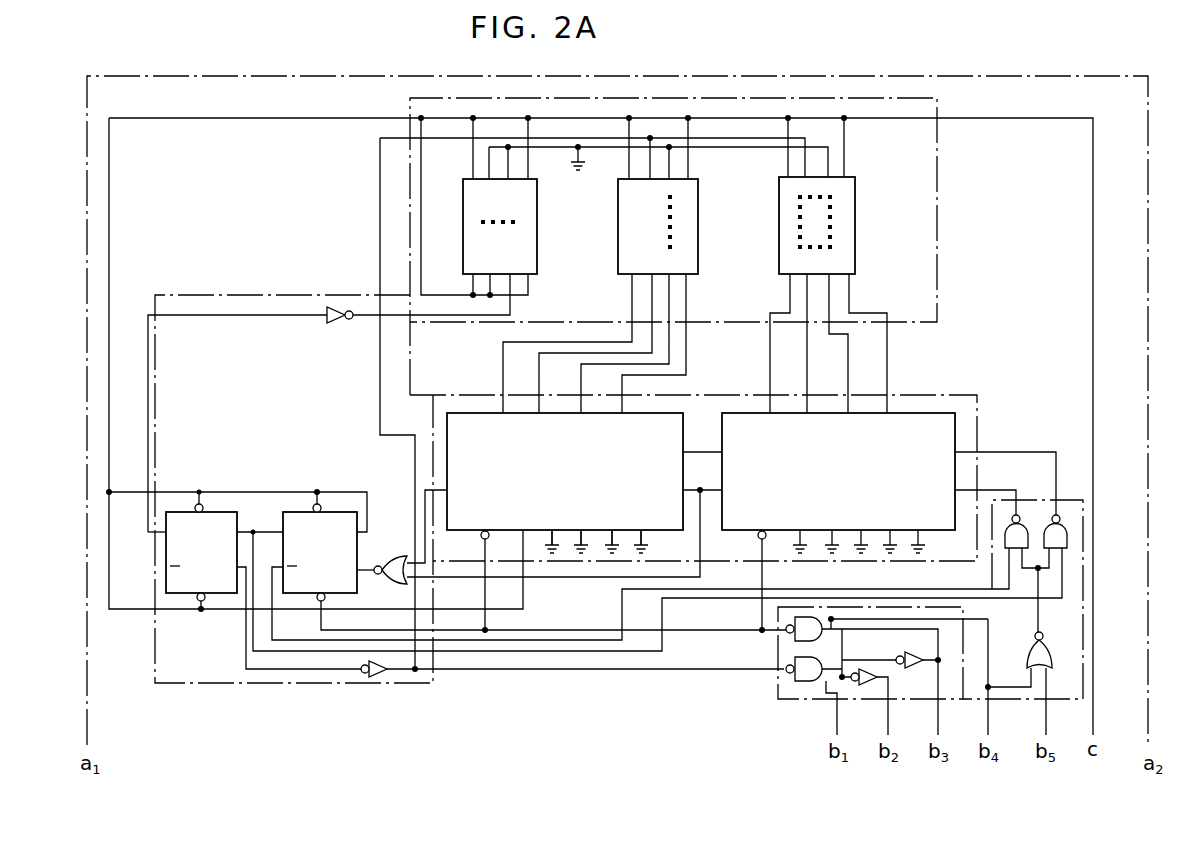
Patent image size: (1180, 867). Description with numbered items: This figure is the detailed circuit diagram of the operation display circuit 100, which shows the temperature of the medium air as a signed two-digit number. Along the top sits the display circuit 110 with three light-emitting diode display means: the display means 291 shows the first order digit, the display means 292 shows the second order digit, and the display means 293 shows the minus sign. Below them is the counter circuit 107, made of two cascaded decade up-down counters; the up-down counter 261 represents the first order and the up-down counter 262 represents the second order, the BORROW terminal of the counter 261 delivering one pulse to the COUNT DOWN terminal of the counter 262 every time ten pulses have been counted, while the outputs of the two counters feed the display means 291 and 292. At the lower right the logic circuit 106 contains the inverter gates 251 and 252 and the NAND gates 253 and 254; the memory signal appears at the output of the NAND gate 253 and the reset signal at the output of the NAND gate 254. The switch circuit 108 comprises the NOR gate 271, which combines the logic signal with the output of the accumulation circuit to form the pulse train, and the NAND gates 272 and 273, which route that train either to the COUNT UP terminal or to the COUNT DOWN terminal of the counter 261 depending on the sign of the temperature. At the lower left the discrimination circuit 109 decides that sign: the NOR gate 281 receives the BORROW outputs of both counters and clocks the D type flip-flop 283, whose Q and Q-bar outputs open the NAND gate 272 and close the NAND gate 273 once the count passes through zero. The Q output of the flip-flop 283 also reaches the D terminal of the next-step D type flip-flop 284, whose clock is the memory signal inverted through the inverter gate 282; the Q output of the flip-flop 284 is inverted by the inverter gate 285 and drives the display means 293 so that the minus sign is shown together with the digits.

The operation display circuit 100 is at (845, 76).
The logic circuit 106 is at (940, 606).
The counter circuit 107 is at (952, 395).
The switch circuit 108 is at (1083, 512).
The discrimination circuit 109 is at (245, 292).
The display circuit 110 is at (937, 238).
The inverter gate 251 is at (904, 652).
The inverter gate 252 is at (877, 672).
The NAND gate 253 is at (796, 658).
The NAND gate 254 is at (802, 617).
The up-down counter 261 is at (955, 430).
The up-down counter 262 is at (470, 413).
The NOR gate 271 is at (1052, 644).
The NAND gate 272 is at (1068, 538).
The NAND gate 273 is at (1026, 516).
The NOR gate 281 is at (402, 560).
The inverter gate 282 is at (386, 678).
The D type flip-flop 283 is at (312, 510).
The D type flip-flop 284 is at (214, 510).
The inverter gate 285 is at (345, 318).
The light-emitting diode display means 291 is at (855, 222).
The light-emitting diode display means 292 is at (698, 222).
The display means 293 is at (537, 222).